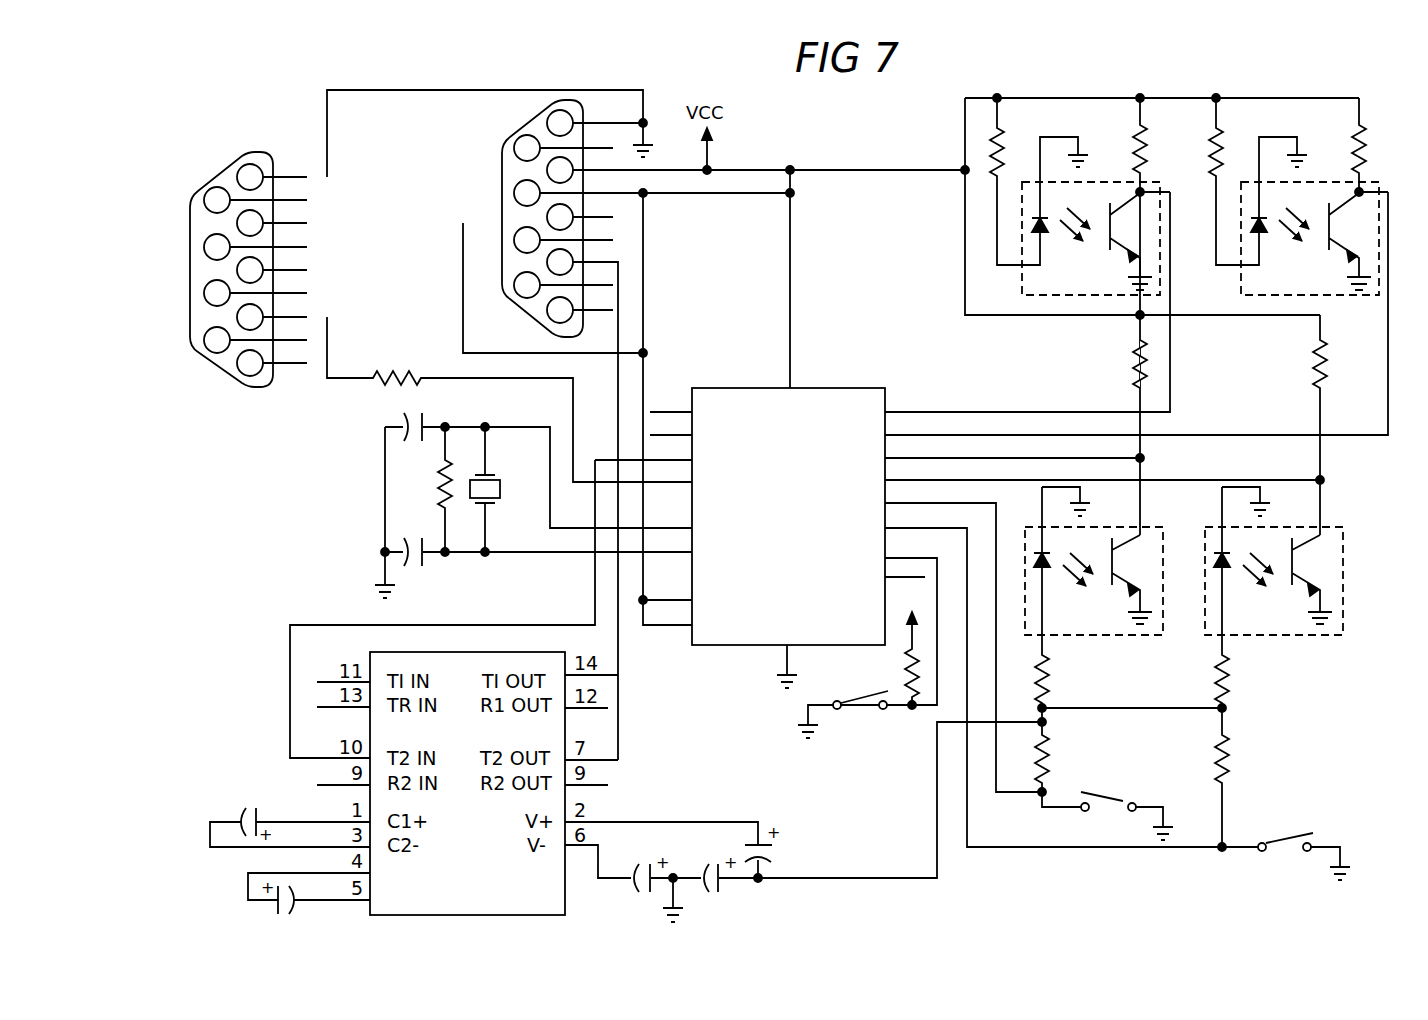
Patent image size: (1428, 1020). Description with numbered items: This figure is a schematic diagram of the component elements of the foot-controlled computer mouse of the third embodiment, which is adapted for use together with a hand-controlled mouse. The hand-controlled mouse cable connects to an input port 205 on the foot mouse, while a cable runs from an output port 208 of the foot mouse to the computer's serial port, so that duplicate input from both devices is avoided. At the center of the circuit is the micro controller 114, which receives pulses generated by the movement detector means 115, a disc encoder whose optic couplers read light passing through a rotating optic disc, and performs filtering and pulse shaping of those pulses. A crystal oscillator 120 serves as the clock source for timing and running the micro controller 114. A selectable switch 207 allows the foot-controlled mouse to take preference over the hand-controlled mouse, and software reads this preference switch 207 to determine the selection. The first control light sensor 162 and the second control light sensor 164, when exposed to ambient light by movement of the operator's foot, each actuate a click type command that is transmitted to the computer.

The input port 205 is at (188, 298).
The output port 208 is at (477, 177).
The micro controller 114 is at (758, 398).
The crystal oscillator 120 is at (400, 497).
The movement detector means 115 is at (1085, 284).
The selectable switch 207 is at (877, 724).
The second control light sensor 164 is at (1116, 776).
The first control light sensor 162 is at (1290, 816).